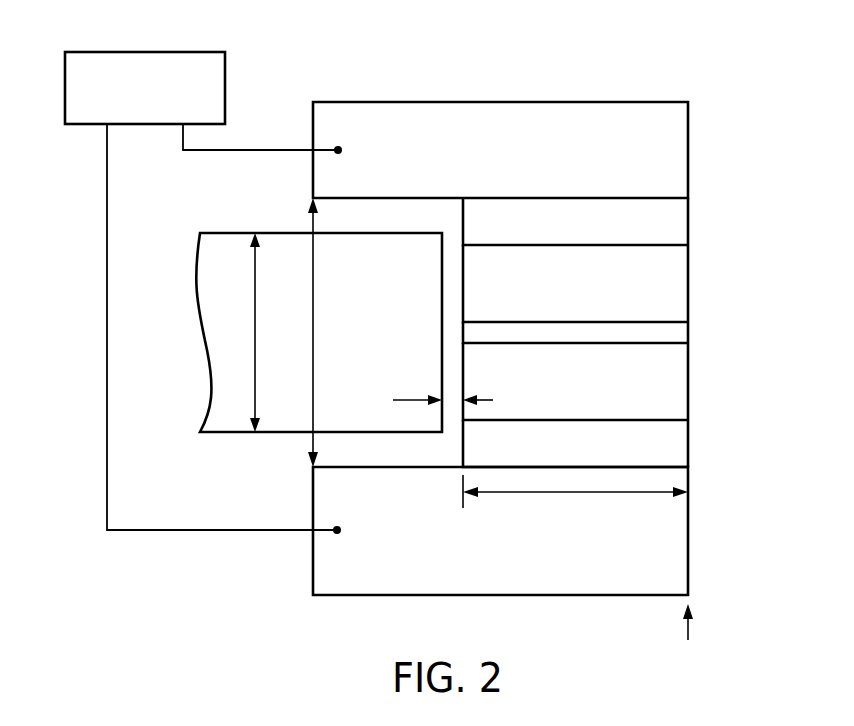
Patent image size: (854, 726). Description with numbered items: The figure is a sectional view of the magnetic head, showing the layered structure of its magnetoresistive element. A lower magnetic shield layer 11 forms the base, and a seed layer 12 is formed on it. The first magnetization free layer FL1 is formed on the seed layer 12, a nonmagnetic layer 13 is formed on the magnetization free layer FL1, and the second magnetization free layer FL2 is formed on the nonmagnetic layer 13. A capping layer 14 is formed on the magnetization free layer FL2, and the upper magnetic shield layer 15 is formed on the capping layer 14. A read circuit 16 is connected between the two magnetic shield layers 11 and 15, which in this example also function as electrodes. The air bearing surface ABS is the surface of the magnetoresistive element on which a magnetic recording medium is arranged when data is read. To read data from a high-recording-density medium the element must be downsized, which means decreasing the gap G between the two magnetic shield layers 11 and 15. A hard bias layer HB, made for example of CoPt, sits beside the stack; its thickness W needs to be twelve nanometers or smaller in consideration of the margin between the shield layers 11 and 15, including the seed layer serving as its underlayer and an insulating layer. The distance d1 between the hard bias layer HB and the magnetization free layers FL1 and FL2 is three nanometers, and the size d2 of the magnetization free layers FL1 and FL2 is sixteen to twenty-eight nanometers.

The read circuit 16 is at (225, 72).
The magnetic shield layer 15 is at (676, 150).
The capping layer 14 is at (676, 218).
The magnetization free layer FL2 is at (676, 285).
The nonmagnetic layer 13 is at (676, 330).
The magnetization free layer FL1 is at (676, 378).
The seed layer 12 is at (676, 440).
The magnetic shield layer 11 is at (675, 523).
The hard bias layer HB is at (207, 351).
The thickness of hard bias layer W is at (254, 332).
The gap G is at (314, 332).
The distance d1 is at (443, 387).
The size d2 is at (575, 497).
The air bearing surface ABS is at (688, 635).